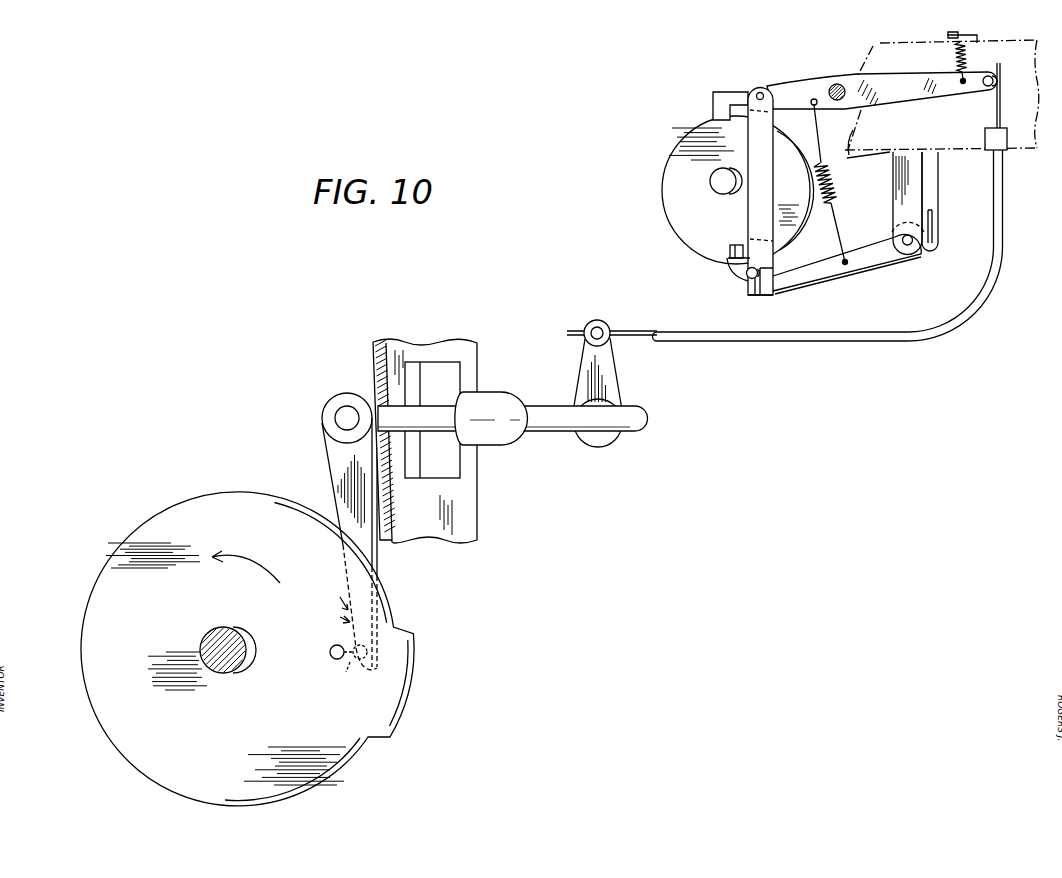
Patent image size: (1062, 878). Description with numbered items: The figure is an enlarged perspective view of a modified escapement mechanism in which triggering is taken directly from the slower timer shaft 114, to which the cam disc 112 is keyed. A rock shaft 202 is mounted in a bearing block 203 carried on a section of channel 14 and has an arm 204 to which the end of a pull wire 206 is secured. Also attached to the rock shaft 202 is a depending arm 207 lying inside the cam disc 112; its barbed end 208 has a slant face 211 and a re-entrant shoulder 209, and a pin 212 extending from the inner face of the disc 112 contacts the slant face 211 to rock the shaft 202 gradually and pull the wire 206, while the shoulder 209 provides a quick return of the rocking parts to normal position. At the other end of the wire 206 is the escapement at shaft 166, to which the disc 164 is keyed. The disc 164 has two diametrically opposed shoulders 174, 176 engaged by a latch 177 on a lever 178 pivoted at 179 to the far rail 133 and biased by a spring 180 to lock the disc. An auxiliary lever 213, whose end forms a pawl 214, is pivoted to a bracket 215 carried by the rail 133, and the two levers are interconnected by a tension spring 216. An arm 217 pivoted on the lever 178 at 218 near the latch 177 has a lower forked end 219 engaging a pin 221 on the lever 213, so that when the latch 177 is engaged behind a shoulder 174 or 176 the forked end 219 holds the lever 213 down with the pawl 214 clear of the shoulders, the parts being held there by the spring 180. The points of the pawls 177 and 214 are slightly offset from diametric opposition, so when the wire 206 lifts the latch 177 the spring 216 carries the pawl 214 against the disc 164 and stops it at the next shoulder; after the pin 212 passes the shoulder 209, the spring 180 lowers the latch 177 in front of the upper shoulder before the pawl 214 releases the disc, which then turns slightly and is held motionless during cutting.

The channel 14 is at (472, 355).
The cam 112 is at (228, 478).
The shaft 114 is at (220, 627).
The rail 133 is at (887, 143).
The disc 164 is at (680, 218).
The shaft 166 is at (711, 177).
The shoulder 174 is at (717, 120).
The shoulder 176 is at (737, 245).
The latch 177 is at (715, 110).
The lever 178 is at (903, 70).
The pivot 179 is at (840, 85).
The spring 180 is at (968, 63).
The rock shaft 202 is at (565, 438).
The bearing block 203 is at (507, 392).
The arm 204 is at (622, 372).
The pull wire 206 is at (995, 110).
The depending arm 207 is at (335, 442).
The barbed end 208 is at (341, 638).
The re-entrant shoulder 209 is at (340, 597).
The slant face 211 is at (340, 617).
The pin 212 is at (348, 660).
The auxiliary lever 213 is at (888, 262).
The pawl 214 is at (728, 267).
The bracket 215 is at (938, 180).
The tension spring 216 is at (835, 203).
The arm 217 is at (772, 147).
The pivot 218 is at (767, 88).
The forked end 219 is at (773, 292).
The pin 221 is at (758, 268).